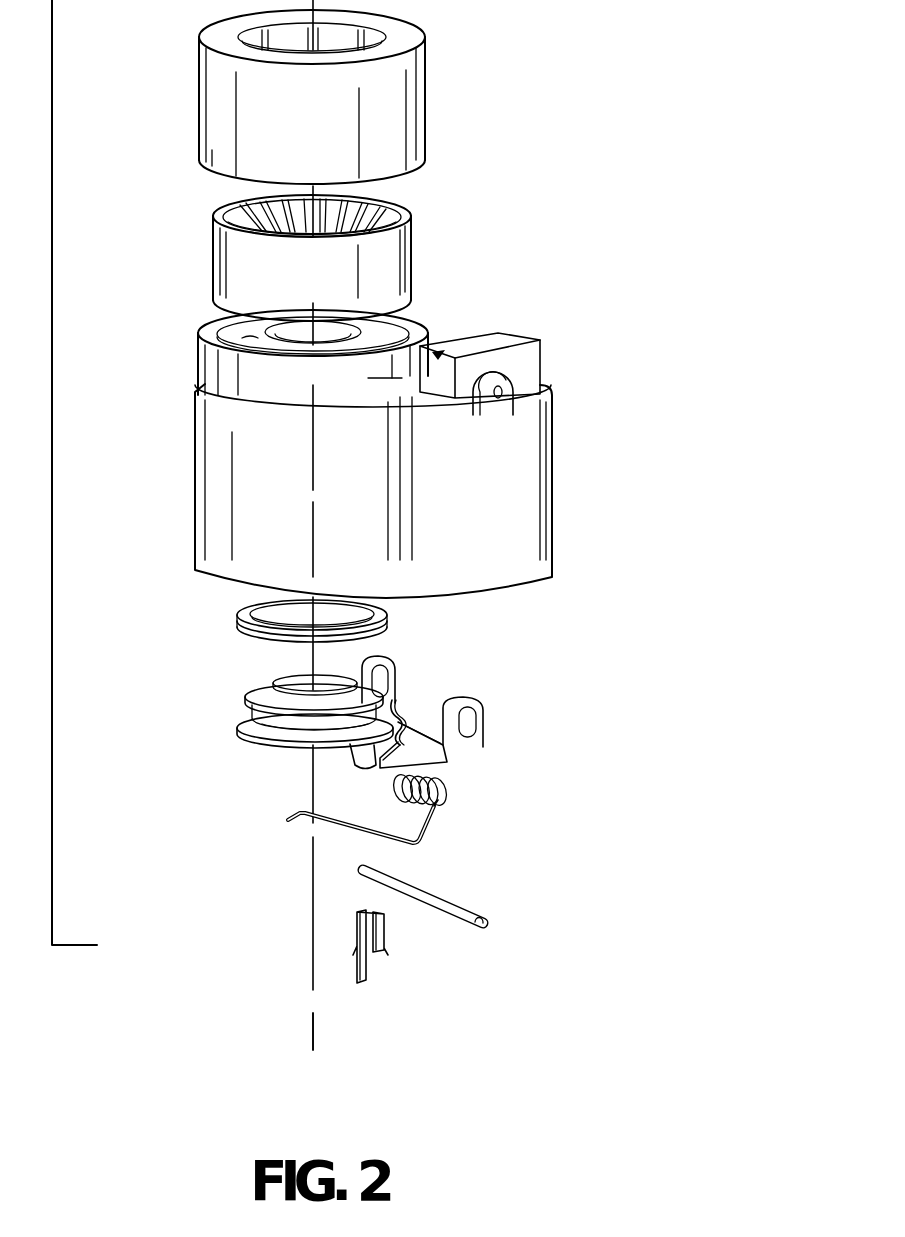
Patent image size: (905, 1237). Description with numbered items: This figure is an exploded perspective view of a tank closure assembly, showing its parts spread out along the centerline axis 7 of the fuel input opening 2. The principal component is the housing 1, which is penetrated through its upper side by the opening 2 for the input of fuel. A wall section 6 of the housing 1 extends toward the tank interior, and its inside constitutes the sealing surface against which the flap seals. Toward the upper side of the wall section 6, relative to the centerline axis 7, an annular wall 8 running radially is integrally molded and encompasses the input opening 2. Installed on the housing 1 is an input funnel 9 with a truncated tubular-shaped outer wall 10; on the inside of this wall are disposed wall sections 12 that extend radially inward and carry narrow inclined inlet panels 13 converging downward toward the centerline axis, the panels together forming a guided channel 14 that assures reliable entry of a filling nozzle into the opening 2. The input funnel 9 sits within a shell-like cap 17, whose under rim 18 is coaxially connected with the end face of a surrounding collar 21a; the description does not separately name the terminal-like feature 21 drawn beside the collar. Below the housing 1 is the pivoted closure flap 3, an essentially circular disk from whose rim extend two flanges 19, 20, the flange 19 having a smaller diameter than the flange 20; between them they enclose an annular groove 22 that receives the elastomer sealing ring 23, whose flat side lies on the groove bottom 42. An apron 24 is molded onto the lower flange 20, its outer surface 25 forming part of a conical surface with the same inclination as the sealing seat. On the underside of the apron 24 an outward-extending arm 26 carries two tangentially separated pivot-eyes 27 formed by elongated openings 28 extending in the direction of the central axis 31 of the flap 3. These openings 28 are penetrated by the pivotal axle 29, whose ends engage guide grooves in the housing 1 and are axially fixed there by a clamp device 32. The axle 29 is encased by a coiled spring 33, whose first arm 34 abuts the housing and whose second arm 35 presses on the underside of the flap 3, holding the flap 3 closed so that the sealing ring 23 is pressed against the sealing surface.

The housing 1 is at (503, 470).
The opening 2 is at (305, 335).
The closure flap 3 is at (230, 735).
The wall section 6 is at (248, 338).
The centerline axis 7 is at (313, 503).
The annular wall 8 is at (372, 322).
The input funnel 9 is at (413, 236).
The outer wall 10 is at (410, 209).
The wall sections 12 is at (378, 204).
The inclined inlet panels 13 is at (298, 213).
The guided channel 14 is at (270, 211).
The shell-like cap 17 is at (412, 100).
The cap lower rim 18 is at (217, 182).
The flange 19 is at (262, 693).
The flange 20 is at (248, 742).
The terminal box 21 is at (421, 343).
The surrounding collar 21a is at (373, 378).
The annular groove 22 is at (283, 724).
The sealing ring 23 is at (393, 626).
The apron 24 is at (394, 716).
The outer surface 25 is at (368, 750).
The arm 26 is at (438, 758).
The pivot-eyes 27 is at (385, 668).
The elongated openings 28 is at (392, 683).
The pivotal axle 29 is at (450, 903).
The central axis 31 is at (313, 1018).
The clamp device 32 is at (388, 923).
The coiled spring 33 is at (437, 813).
The first arm 34 is at (442, 780).
The second arm 35 is at (385, 843).
The groove bottom 42 is at (303, 722).